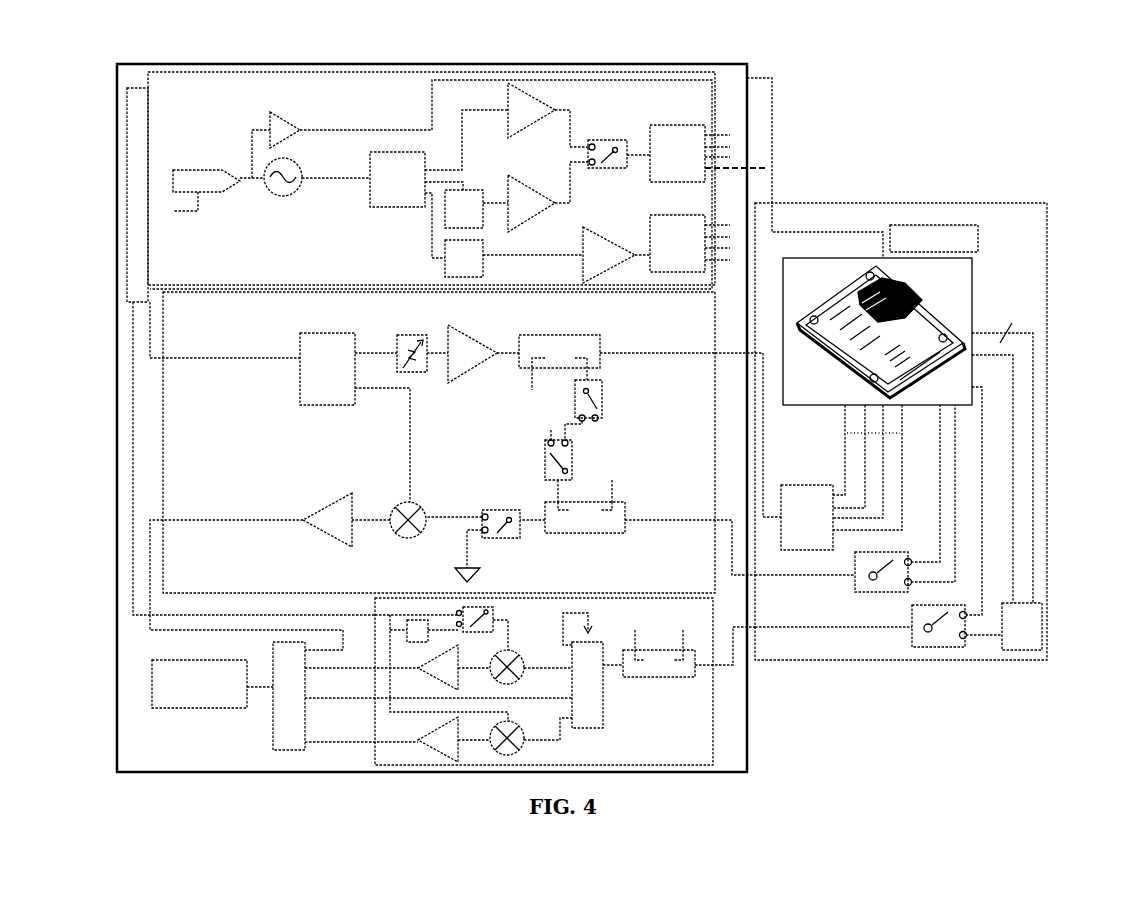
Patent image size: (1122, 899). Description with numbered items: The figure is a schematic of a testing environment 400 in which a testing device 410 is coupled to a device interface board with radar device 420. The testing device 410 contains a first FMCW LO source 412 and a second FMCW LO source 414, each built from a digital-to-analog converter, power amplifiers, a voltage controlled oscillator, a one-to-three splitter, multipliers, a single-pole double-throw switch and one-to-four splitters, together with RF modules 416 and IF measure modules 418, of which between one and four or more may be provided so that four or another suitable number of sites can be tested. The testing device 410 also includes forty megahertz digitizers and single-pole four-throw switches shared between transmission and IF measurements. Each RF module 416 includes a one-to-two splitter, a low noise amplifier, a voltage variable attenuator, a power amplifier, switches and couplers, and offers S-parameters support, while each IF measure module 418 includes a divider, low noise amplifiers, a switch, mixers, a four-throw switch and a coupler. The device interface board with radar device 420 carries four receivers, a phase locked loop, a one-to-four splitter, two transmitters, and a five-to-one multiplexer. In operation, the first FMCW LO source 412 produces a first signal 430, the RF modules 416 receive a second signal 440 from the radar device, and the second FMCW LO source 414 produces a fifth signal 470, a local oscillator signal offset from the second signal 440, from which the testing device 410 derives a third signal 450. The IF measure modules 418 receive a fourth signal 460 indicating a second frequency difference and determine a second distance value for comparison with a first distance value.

The testing environment 400 is at (83, 353).
The testing device 410 is at (117, 80).
The FMCW LO source 1 412 is at (225, 72).
The FMCW LO source 2 414 is at (127, 133).
The RF module 416 is at (163, 433).
The IF measure module 418 is at (713, 728).
The device interface board with radar device 420 is at (1047, 287).
The first signal 430 is at (767, 168).
The second signal 440 is at (795, 580).
The third signal 450 is at (765, 455).
The fourth signal 460 is at (862, 628).
The fifth signal 470 is at (133, 483).